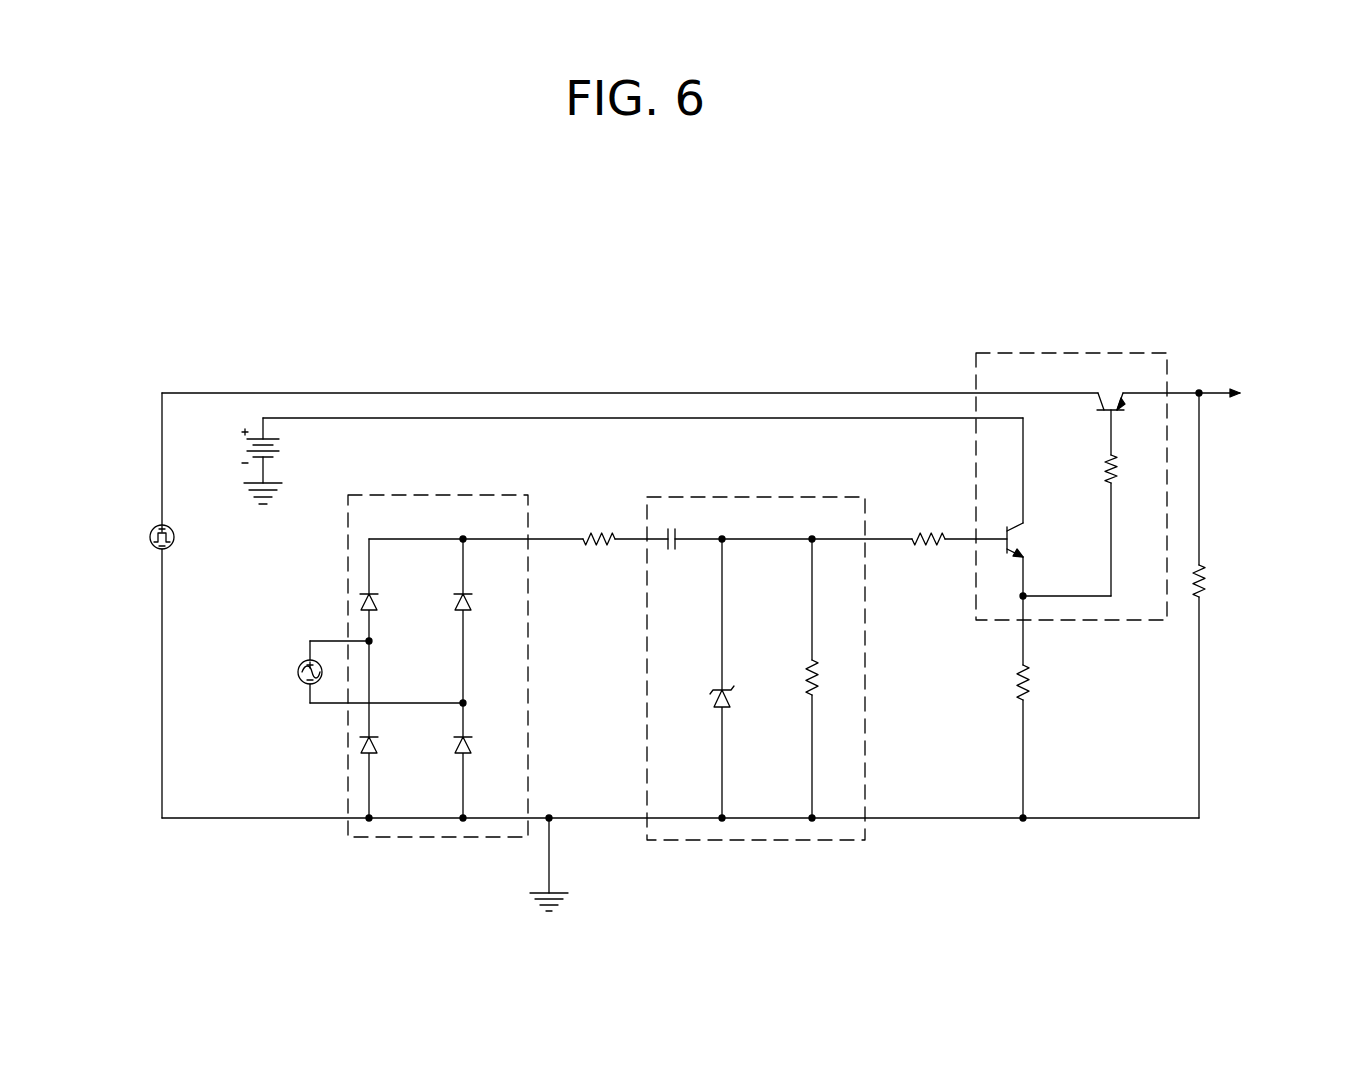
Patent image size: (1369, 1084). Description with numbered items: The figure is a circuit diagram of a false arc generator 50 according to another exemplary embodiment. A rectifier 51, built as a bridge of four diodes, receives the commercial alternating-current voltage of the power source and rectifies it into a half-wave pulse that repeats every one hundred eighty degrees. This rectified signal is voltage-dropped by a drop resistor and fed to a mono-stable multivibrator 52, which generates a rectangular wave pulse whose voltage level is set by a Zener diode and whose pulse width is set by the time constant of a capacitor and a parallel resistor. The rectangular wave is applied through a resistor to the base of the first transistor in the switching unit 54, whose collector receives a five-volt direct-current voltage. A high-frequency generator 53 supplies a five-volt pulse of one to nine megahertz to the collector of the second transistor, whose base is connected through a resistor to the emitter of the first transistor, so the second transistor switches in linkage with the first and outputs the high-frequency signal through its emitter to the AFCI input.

The arc fault detection circuit 50 is at (957, 329).
The rectifier 51 is at (510, 495).
The mono-stable multivibrator 52 is at (840, 497).
The high-frequency generator 53 is at (150, 537).
The switching unit 54 is at (1148, 353).